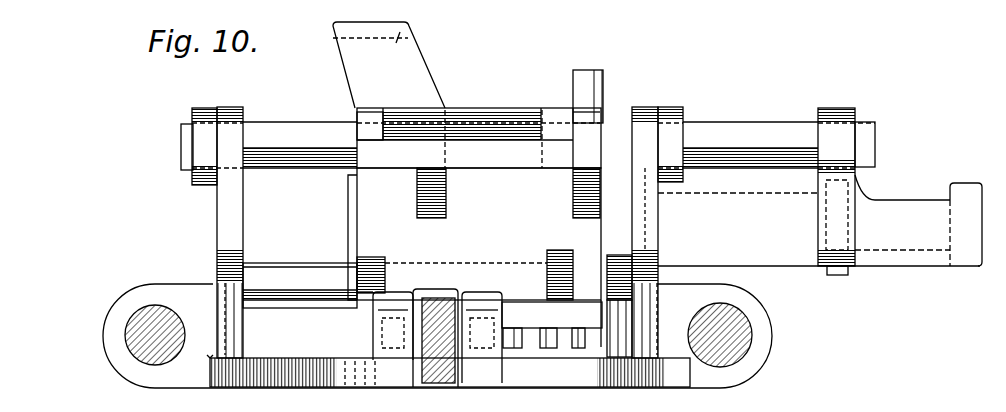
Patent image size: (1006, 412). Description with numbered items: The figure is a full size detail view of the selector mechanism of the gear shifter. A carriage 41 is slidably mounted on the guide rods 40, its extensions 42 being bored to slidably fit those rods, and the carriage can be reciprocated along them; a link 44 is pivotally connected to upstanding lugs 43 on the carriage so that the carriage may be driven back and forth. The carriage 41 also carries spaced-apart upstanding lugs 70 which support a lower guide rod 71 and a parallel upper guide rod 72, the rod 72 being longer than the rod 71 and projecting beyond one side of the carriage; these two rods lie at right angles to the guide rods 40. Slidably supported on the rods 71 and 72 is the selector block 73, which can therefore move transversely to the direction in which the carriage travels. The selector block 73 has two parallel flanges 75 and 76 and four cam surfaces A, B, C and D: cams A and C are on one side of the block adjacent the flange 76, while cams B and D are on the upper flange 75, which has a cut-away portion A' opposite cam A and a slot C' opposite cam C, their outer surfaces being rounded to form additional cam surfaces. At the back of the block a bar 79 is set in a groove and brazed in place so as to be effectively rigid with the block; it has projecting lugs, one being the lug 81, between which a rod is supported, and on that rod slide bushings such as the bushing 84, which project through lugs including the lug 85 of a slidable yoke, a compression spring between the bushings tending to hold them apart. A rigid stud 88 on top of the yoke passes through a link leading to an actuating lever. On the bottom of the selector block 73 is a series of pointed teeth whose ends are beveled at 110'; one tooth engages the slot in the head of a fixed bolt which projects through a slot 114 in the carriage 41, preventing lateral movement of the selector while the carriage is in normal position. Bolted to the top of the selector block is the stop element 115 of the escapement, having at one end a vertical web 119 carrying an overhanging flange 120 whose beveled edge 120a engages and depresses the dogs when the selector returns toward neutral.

The guide rods 40 is at (130, 336).
The carriage 41 is at (334, 378).
The extensions 42 is at (112, 366).
The upstanding lugs 43 is at (480, 298).
The link 44 is at (432, 300).
The upstanding lugs 70 is at (225, 209).
The lower guide rod 71 is at (297, 272).
The upper guide rod 72 is at (323, 152).
The selector block 73 is at (509, 108).
The upper flange 75 is at (479, 138).
The flange 76 is at (552, 315).
The bar 79 is at (348, 212).
The projecting lug 81 is at (966, 183).
The bushing 84 is at (907, 200).
The lug 85 is at (841, 275).
The rigid stud 88 is at (592, 72).
The beveled ends of teeth 110' is at (545, 353).
The slot 114 is at (480, 378).
The stop element 115 is at (332, 62).
The vertical web 119 is at (388, 86).
The overhanging flange 120 is at (370, 49).
The beveled edge 120a is at (404, 32).
The cam surface A is at (371, 263).
The cut-away portion A' is at (347, 118).
The cam surface B is at (428, 186).
The cam surface C is at (589, 294).
The slot C' is at (598, 96).
The cam surface D is at (580, 185).